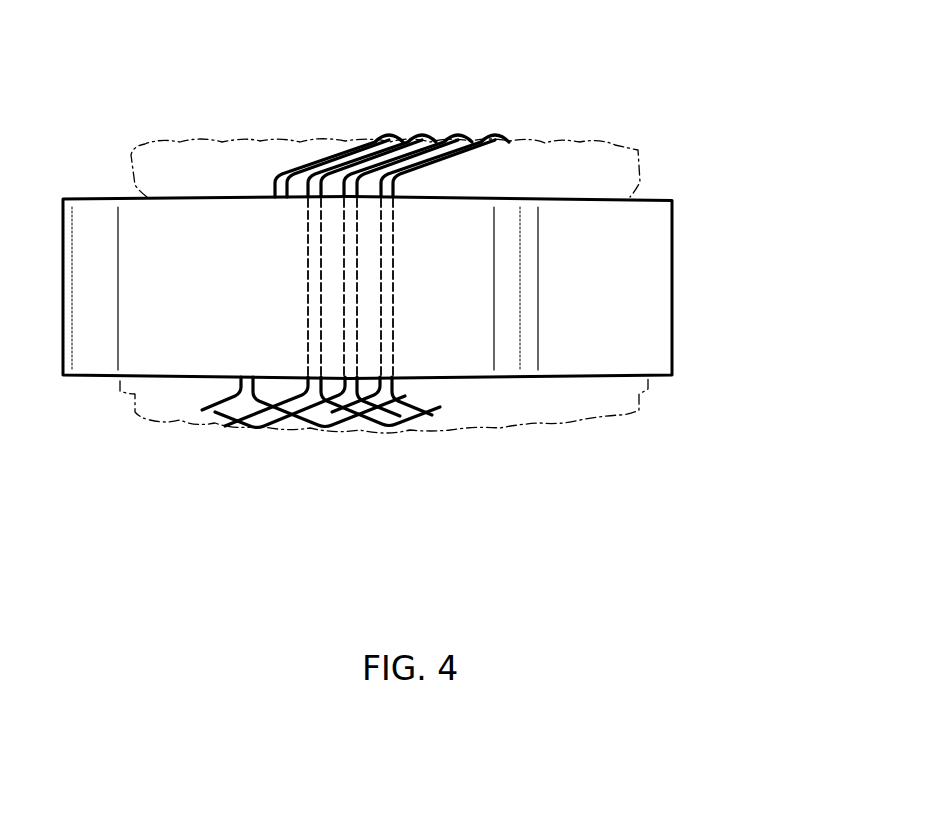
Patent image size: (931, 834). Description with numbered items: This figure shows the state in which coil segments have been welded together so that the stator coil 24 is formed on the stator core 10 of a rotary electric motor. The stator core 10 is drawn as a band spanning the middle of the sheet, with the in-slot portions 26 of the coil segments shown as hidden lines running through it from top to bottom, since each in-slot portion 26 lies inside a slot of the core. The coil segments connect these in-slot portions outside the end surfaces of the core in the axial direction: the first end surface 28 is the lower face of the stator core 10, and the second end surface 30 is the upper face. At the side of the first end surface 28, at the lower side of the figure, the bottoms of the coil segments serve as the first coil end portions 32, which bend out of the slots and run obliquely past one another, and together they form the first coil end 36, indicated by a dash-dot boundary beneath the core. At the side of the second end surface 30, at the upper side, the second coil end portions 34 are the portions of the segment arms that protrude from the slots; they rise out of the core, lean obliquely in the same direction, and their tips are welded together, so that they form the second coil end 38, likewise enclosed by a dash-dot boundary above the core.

The stator core 10 is at (647, 281).
The stator coil 24 is at (411, 287).
The in-slot portion 26 is at (352, 238).
The first end surface 28 is at (234, 449).
The second end surface 30 is at (281, 104).
The first coil end portion 32 is at (248, 428).
The second coil end portion 34 is at (330, 155).
The first coil end 36 is at (583, 438).
The second coil end 38 is at (188, 132).